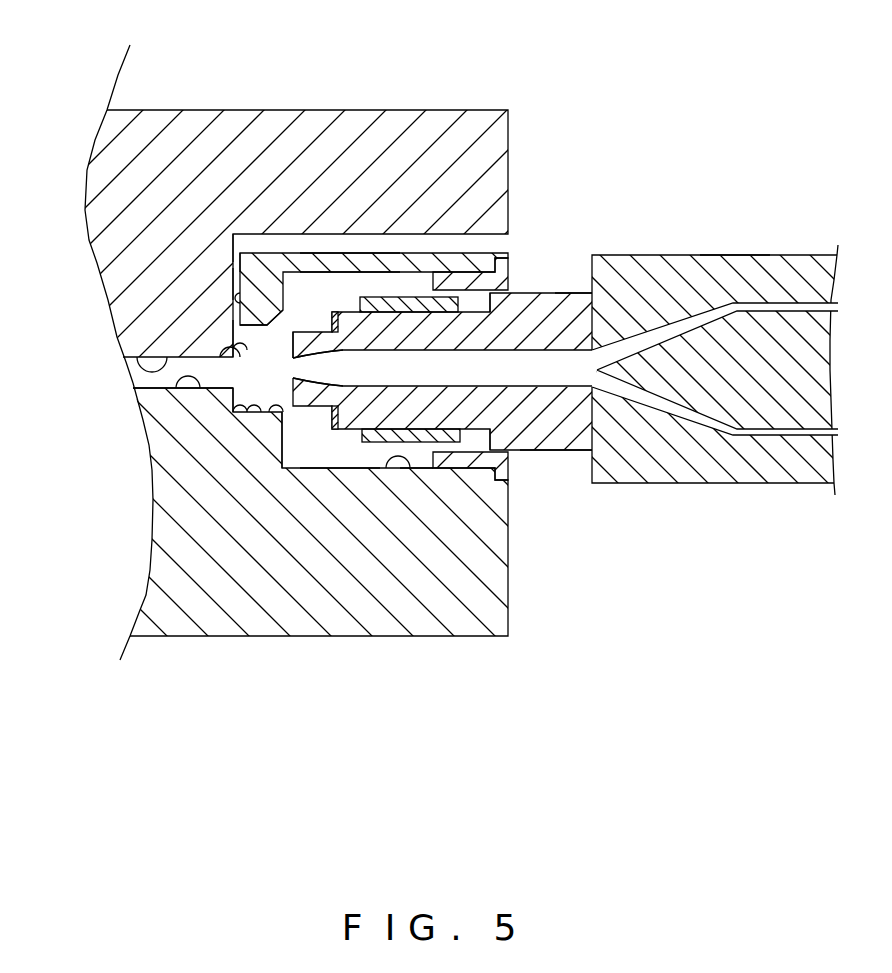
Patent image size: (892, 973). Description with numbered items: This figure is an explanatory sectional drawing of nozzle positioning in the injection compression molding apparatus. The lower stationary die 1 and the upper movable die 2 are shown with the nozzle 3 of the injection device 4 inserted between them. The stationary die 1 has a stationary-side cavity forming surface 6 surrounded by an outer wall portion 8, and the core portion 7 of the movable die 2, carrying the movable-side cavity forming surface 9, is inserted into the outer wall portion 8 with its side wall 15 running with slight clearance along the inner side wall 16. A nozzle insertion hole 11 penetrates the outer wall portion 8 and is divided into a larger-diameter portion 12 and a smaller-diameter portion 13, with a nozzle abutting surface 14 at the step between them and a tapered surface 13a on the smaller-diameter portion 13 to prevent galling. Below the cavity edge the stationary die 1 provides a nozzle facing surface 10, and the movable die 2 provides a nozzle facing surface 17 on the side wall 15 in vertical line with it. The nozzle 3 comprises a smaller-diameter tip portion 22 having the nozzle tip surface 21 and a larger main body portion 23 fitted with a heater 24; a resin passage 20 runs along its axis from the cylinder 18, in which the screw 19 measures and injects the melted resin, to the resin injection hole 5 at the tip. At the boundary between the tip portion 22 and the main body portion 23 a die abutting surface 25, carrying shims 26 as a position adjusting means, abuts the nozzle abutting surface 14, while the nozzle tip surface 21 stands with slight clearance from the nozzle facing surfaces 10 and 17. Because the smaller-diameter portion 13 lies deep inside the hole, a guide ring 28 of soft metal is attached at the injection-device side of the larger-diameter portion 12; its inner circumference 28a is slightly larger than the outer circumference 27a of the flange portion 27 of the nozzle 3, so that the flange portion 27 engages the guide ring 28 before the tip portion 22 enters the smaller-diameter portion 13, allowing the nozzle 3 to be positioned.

The stationary die 1 is at (365, 648).
The movable die 2 is at (243, 107).
The nozzle 3 is at (551, 475).
The injection device 4 is at (733, 492).
The resin injection hole 5 is at (290, 369).
The stationary-side cavity forming surface 6 is at (172, 386).
The core portion 7 is at (152, 304).
The outer wall portion 8 is at (328, 263).
The movable-side cavity forming surface 9 is at (140, 357).
The nozzle facing surface 10 is at (233, 400).
The nozzle insertion hole 11 is at (321, 462).
The larger-diameter portion 12 is at (413, 470).
The smaller-diameter portion 13 is at (150, 612).
The tapered surface 13a is at (275, 415).
The nozzle abutting surface 14 is at (258, 430).
The side wall 15 is at (240, 285).
The inner side wall 16 is at (233, 228).
The nozzle facing surface 17 is at (230, 350).
The cylinder 18 is at (722, 255).
The screw 19 is at (733, 380).
The resin passage 20 is at (454, 382).
The nozzle tip surface 21 is at (240, 330).
The tip portion 22 is at (237, 262).
The main body portion 23 is at (418, 308).
The heater 24 is at (382, 305).
The die abutting surface 25 is at (248, 262).
The shims 26 is at (307, 337).
The flange portion 27 is at (548, 325).
The outer circumference 27a is at (575, 291).
The guide ring 28 is at (457, 278).
The inner circumference 28a is at (483, 300).